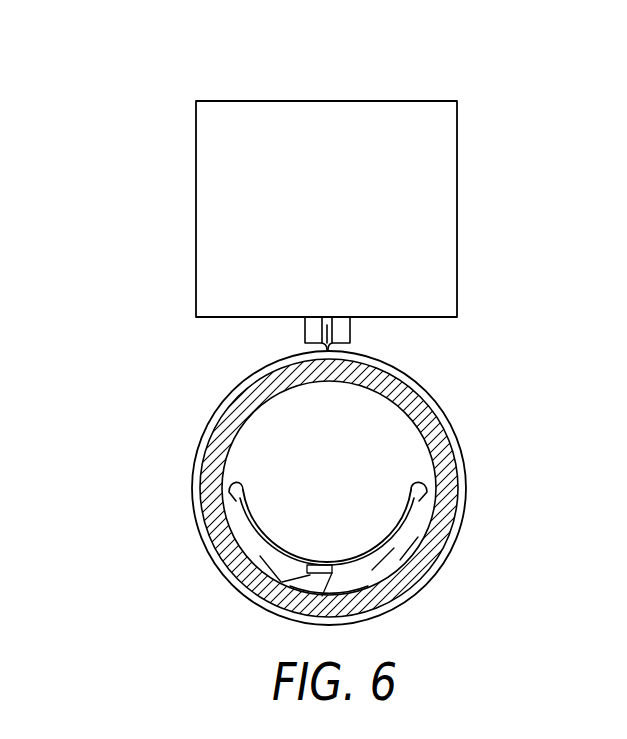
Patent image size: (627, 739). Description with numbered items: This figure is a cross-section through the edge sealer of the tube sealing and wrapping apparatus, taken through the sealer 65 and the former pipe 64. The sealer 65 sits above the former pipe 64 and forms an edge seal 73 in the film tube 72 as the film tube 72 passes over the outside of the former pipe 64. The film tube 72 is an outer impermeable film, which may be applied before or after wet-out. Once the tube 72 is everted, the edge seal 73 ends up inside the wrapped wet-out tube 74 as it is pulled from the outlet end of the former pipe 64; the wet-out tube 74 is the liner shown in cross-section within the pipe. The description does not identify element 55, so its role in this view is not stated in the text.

The sealer 65 is at (235, 154).
The edge seal 73 is at (334, 332).
The film tube 72 is at (467, 476).
The trough 55 is at (248, 541).
The former pipe 64 is at (427, 562).
The wrapped wet-out tube 74 is at (334, 533).